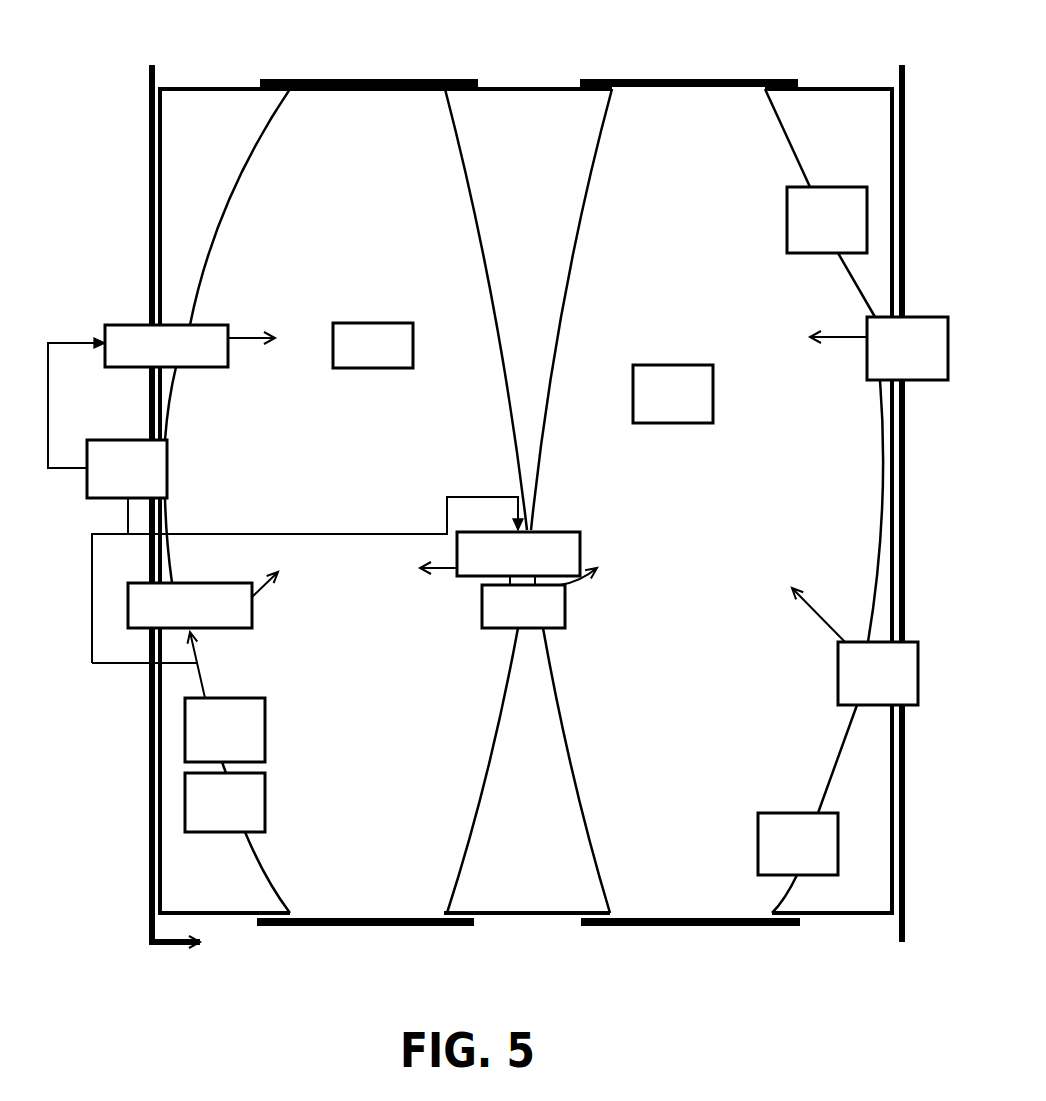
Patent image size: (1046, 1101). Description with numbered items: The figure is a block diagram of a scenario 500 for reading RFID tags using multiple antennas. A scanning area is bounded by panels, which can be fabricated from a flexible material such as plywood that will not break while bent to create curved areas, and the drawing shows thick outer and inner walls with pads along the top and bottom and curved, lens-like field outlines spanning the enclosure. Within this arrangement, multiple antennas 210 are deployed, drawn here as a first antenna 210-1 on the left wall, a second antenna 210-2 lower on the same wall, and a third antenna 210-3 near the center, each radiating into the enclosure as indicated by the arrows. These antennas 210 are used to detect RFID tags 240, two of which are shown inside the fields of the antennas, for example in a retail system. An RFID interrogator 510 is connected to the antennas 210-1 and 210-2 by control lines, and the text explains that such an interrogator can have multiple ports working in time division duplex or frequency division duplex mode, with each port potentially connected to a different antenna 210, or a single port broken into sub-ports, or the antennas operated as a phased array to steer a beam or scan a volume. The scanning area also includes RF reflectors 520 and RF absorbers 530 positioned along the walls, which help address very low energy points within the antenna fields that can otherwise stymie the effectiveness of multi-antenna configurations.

The scenario 500 is at (403, 52).
The antenna 210-1 is at (129, 359).
The antenna 210-2 is at (152, 619).
The antenna 210-3 is at (481, 567).
The antenna 210 is at (499, 620).
The RFID tag 240 is at (348, 358).
The RFID interrogator 510 is at (102, 482).
The RF reflector 520 is at (200, 816).
The RF absorber 530 is at (511, 753).